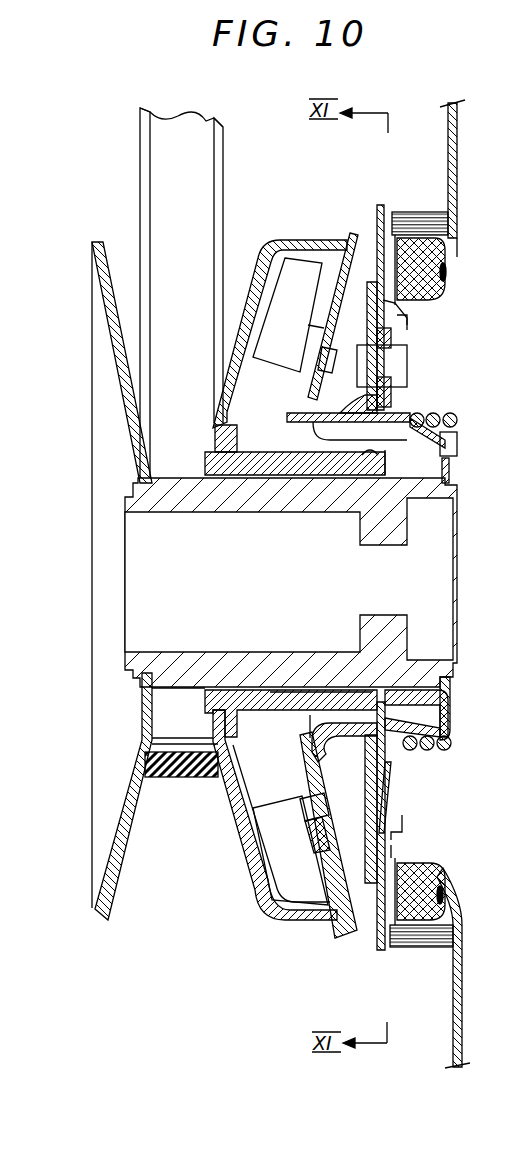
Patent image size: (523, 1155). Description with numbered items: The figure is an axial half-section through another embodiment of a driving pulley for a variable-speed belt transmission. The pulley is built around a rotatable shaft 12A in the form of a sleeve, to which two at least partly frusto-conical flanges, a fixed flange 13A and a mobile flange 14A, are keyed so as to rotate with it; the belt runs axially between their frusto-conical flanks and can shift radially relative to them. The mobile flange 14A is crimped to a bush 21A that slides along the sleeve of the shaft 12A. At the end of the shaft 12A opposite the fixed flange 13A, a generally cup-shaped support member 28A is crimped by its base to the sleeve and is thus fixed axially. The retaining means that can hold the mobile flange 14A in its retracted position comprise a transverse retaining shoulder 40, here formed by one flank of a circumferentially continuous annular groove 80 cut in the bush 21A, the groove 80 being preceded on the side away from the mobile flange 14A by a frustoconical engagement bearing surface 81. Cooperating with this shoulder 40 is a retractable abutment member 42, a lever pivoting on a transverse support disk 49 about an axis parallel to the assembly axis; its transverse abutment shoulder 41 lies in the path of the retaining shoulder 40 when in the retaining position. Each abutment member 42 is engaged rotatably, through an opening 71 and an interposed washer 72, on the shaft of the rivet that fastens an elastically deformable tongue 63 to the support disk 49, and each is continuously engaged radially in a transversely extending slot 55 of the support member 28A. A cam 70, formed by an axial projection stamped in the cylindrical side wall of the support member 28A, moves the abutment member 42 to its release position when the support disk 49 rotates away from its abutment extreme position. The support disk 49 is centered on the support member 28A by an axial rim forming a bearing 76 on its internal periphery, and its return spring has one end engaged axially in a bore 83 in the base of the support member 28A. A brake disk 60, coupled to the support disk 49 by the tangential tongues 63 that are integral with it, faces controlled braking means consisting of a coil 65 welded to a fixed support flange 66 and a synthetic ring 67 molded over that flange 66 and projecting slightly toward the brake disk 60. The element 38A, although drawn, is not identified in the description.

The fixed flange 13A is at (104, 238).
The mobile flange 14A is at (263, 236).
The rotatable shaft 12A is at (120, 484).
The bush 21A is at (252, 448).
The support member 28A is at (318, 450).
The bearing race 38A is at (343, 420).
The groove 80 is at (352, 462).
The transverse retaining shoulder 40 is at (385, 458).
The support disk 49 is at (368, 268).
The brake disk 60 is at (382, 199).
The fixed support flange 66 is at (463, 156).
The elastically deformable tongue 63 is at (397, 340).
The opening 71 is at (395, 355).
The washer 72 is at (391, 378).
The cam 70 is at (397, 413).
The bore 83 is at (452, 442).
The frustoconical engagement bearing surface 81 is at (451, 462).
The transverse abutment shoulder 41 is at (400, 700).
The slot 55 is at (425, 720).
The bearing 76 is at (349, 742).
The retractable abutment member 42 is at (389, 758).
The coil 65 is at (420, 865).
The ring 67 is at (417, 942).